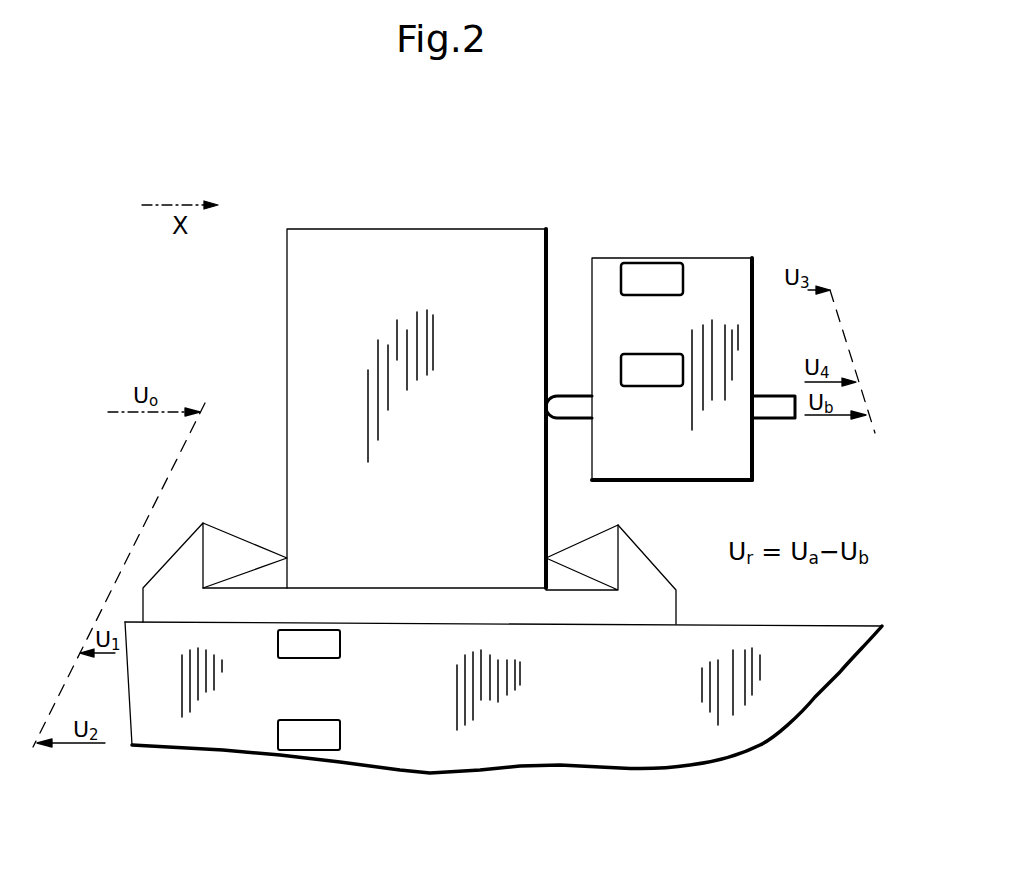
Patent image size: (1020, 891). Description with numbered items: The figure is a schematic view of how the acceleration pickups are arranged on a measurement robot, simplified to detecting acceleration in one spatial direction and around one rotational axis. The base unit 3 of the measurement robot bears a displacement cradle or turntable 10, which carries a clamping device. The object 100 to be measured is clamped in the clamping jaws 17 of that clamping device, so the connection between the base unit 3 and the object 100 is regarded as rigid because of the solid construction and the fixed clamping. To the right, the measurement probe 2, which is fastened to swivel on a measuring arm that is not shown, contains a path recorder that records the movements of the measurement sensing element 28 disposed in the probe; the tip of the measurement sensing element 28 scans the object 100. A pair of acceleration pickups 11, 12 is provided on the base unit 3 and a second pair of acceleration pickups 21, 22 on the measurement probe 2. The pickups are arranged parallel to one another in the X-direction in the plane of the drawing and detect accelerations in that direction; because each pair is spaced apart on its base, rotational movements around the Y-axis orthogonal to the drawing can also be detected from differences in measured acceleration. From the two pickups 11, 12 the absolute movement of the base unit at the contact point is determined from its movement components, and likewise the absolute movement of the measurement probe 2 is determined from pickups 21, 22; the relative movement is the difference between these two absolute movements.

The measurement probe 2 is at (738, 286).
The base unit 3 is at (432, 735).
The displacement cradle or turntable 10 is at (637, 598).
The acceleration pickup 11 is at (290, 648).
The acceleration pickup 12 is at (313, 740).
The clamping jaws 17 is at (602, 563).
The acceleration pickup 21 is at (633, 276).
The acceleration pickup 22 is at (670, 368).
The measurement sensing element 28 is at (567, 405).
The object to be measured 100 is at (478, 255).